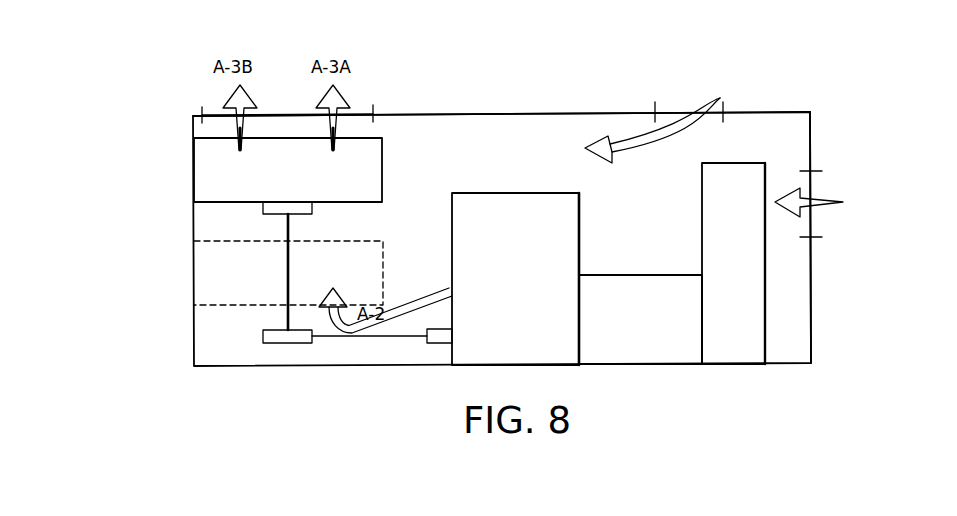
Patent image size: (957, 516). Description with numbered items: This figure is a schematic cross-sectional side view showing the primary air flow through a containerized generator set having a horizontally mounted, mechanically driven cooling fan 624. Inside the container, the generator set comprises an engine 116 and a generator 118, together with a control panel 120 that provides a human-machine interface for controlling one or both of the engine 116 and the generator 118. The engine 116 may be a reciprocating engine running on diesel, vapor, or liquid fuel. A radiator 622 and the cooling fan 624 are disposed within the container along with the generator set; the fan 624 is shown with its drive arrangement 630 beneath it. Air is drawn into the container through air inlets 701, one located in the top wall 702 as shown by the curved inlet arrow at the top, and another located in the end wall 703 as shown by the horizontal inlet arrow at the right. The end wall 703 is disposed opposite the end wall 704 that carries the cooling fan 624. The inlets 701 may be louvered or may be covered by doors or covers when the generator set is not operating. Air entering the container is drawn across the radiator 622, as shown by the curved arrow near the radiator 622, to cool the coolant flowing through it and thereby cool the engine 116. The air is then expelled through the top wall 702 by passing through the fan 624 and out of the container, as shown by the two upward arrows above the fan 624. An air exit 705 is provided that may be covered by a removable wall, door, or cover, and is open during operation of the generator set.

The engine 116 is at (525, 296).
The generator 118 is at (648, 332).
The control panel 120 is at (743, 279).
The radiator 622 is at (237, 284).
The cooling fan 624 is at (302, 180).
The shaft assembly 630 is at (349, 358).
The air inlet 701 is at (674, 82).
The top wall 702 is at (791, 111).
The end wall 703 is at (811, 321).
The end wall 704 is at (194, 348).
The air exit 705 is at (364, 88).